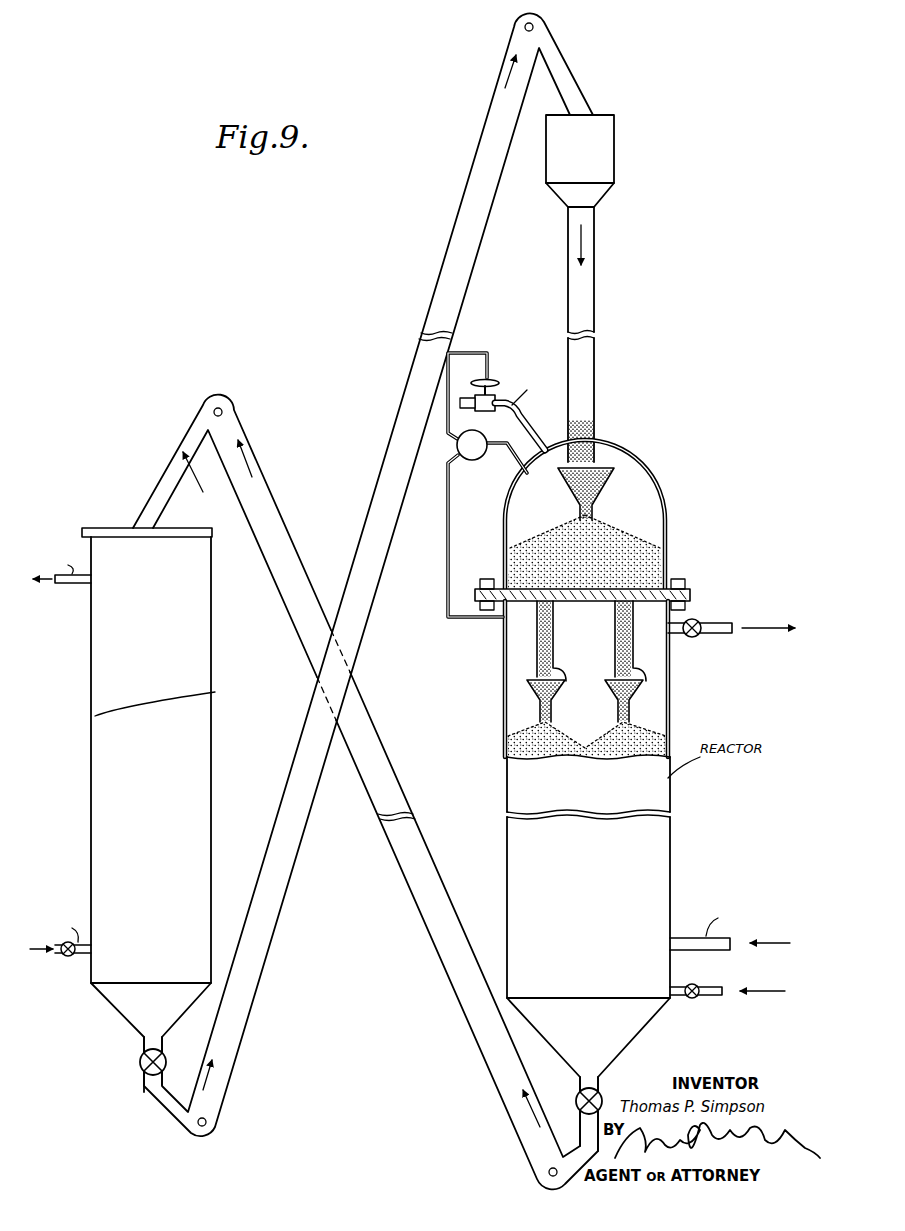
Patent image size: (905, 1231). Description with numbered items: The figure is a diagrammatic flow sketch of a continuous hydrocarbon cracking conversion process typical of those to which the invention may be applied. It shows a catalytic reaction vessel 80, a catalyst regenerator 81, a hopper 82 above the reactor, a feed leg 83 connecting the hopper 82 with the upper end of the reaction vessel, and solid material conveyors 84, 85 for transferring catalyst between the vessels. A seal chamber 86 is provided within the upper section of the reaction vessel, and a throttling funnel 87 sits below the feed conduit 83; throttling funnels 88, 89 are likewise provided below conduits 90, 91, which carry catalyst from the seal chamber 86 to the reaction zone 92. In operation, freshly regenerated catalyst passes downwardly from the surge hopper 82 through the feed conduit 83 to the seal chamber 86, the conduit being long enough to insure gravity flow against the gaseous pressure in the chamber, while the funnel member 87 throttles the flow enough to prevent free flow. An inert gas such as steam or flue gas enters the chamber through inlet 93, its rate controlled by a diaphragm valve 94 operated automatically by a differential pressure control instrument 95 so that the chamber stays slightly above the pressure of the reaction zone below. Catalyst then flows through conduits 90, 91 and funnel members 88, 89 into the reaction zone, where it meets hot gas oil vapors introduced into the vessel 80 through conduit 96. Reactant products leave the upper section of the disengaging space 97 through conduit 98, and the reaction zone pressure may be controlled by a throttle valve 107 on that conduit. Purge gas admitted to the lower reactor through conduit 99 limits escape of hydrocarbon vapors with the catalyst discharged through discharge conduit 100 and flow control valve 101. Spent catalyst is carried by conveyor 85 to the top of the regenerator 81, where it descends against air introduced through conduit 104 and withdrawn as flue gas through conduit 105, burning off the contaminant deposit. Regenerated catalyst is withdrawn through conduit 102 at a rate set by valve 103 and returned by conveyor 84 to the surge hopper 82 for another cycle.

The catalytic reaction vessel 80 is at (676, 851).
The catalyst regenerator 81 is at (212, 625).
The hopper 82 is at (606, 158).
The feed leg 83 is at (596, 290).
The solid material conveyor 84 is at (434, 289).
The solid material conveyor 85 is at (269, 488).
The seal chamber 86 is at (636, 488).
The throttling funnel 87 is at (558, 488).
The throttling funnel 88 is at (538, 705).
The throttling funnel 89 is at (638, 703).
The conduit 90 is at (540, 630).
The conduit 91 is at (624, 628).
The reaction zone 92 is at (506, 748).
The inlet 93 is at (536, 443).
The diaphragm valve 94 is at (482, 412).
The differential pressure control instrument 95 is at (472, 460).
The conduit 96 is at (698, 950).
The disengaging space 97 is at (504, 659).
The conduit 98 is at (715, 634).
The conduit 99 is at (704, 996).
The discharge conduit 100 is at (578, 1140).
The flow control valve 101 is at (603, 1099).
The conduit 102 is at (146, 1103).
The valve 103 is at (139, 1060).
The conduit 104 is at (75, 960).
The conduit 105 is at (73, 590).
The throttle valve 107 is at (698, 615).